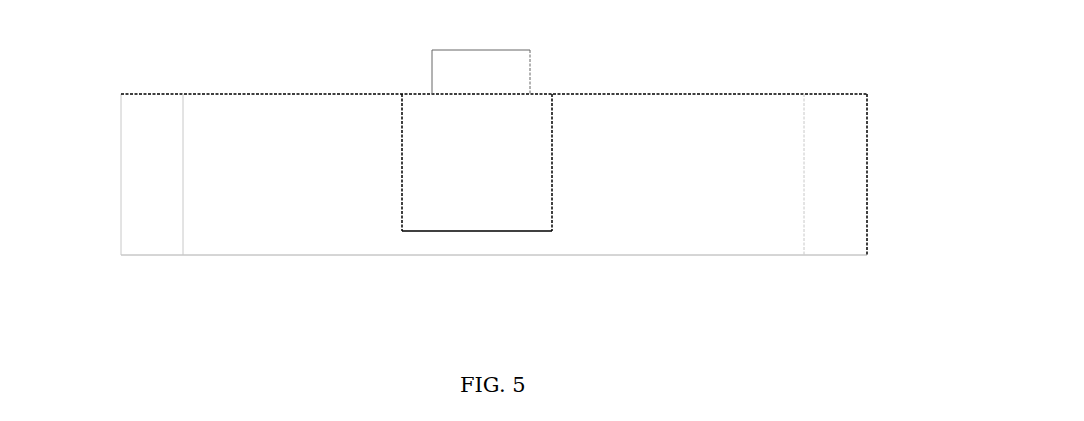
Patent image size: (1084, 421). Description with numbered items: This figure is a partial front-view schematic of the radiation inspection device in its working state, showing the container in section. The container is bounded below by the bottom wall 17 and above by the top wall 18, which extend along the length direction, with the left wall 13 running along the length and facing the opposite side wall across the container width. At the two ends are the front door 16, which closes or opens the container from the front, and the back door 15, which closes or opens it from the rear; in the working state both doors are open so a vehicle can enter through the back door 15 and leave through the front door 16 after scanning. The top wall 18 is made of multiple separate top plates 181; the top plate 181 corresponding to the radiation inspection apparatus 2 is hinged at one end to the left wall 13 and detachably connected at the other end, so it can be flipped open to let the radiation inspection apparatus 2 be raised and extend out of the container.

The radiation inspection apparatus 2 is at (503, 63).
The left wall 13 is at (635, 185).
The back door 15 is at (843, 177).
The front door 16 is at (150, 172).
The bottom wall 17 is at (287, 255).
The top wall 18 is at (243, 93).
The top plate 181 is at (428, 173).